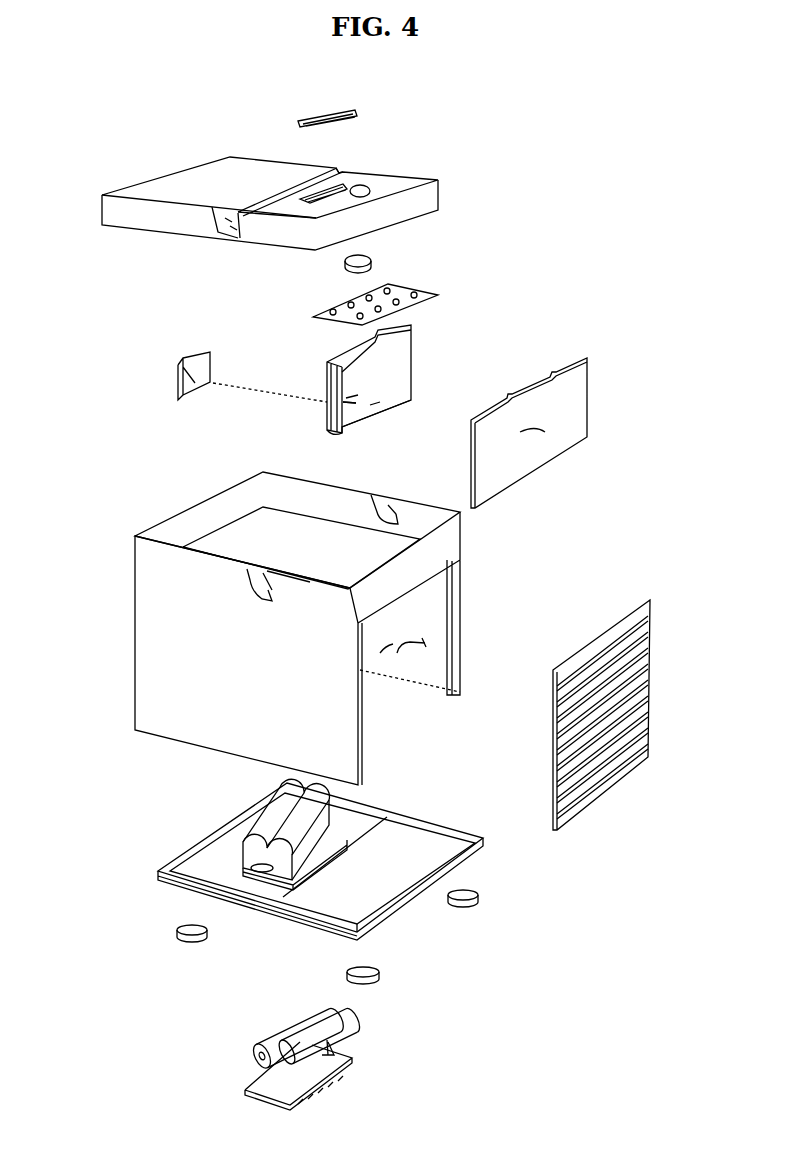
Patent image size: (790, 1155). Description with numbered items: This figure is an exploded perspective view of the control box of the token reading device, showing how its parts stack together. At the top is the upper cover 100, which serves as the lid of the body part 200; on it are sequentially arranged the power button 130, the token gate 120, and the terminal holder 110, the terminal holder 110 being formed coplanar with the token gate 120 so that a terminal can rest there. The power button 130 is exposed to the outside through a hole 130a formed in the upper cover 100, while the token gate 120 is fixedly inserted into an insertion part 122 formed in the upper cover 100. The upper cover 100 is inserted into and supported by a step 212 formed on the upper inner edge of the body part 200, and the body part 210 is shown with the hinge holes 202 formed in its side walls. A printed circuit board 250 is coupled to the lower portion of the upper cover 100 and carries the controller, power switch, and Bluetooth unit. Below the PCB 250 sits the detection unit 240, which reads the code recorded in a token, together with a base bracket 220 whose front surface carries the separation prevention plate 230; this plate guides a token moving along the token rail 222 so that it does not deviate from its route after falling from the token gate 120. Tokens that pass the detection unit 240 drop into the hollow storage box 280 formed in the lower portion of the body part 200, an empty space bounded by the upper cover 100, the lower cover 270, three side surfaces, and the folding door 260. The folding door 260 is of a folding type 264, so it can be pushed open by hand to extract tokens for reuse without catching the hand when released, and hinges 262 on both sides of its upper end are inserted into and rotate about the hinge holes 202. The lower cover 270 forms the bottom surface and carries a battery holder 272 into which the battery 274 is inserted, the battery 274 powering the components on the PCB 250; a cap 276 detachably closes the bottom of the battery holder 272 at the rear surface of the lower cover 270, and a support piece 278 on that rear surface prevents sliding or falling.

The upper cover 100 is at (202, 184).
The terminal holder 110 is at (222, 224).
The token gate 120 is at (343, 113).
The insertion part 122 is at (342, 172).
The hole 130a is at (430, 168).
The power button 130 is at (373, 263).
The printed circuit board 250 is at (438, 292).
The base bracket 220 is at (390, 373).
The token rail 222 is at (353, 403).
The detection unit 240 is at (180, 373).
The separation prevention plate 230 is at (540, 440).
The body part 200 is at (262, 634).
The body frame 210 is at (255, 583).
The step 212 is at (230, 522).
The hinge holes 202 is at (353, 632).
The storage box 280 is at (397, 653).
The folding door 260 is at (607, 700).
The hinges 262 is at (550, 685).
The folding type 264 is at (650, 667).
The lower cover 270 is at (279, 858).
The battery holder 272 is at (275, 815).
The battery 274 is at (275, 1045).
The cap 276 is at (330, 1075).
The support piece 278 is at (379, 972).